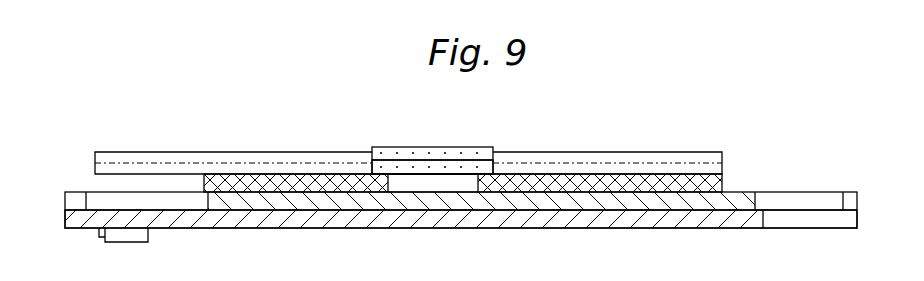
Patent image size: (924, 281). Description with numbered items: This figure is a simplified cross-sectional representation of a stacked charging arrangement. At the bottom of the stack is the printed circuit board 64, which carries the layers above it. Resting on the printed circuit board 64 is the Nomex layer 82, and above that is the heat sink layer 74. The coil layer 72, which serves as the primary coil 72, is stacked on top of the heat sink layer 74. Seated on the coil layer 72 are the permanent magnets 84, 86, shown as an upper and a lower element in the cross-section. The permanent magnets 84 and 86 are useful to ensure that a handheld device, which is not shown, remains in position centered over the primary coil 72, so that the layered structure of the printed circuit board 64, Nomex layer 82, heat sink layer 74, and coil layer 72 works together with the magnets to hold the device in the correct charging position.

The printed circuit board 64 is at (608, 220).
The coil layer 72 is at (630, 160).
The heat sink layer 74 is at (710, 183).
The Nomex layer 82 is at (750, 197).
The permanent magnet 84 is at (403, 155).
The permanent magnet 86 is at (495, 158).